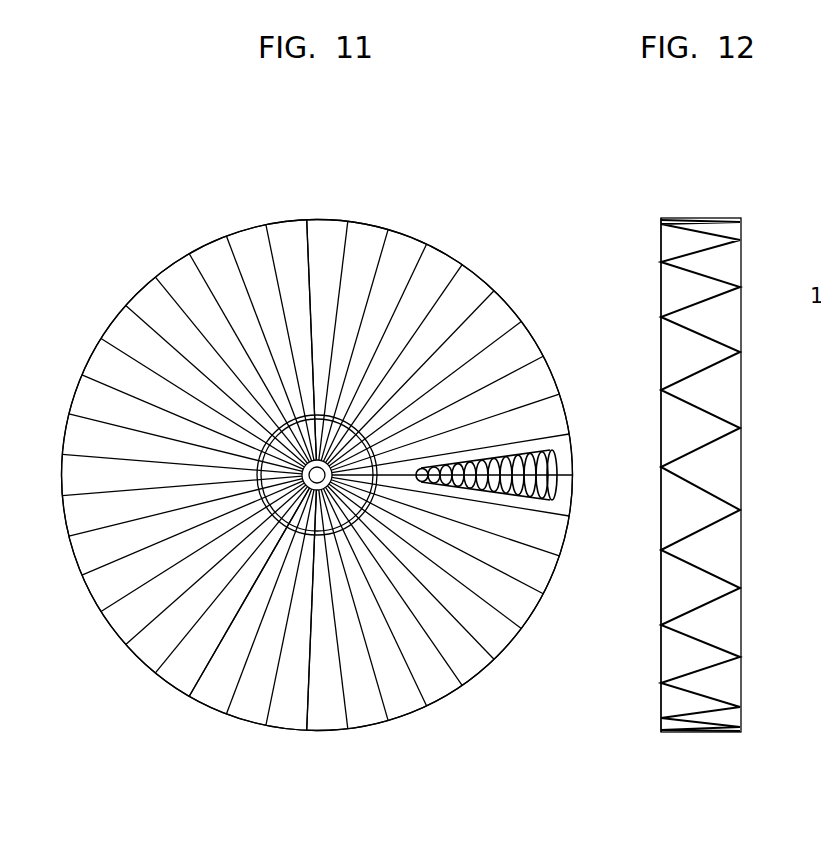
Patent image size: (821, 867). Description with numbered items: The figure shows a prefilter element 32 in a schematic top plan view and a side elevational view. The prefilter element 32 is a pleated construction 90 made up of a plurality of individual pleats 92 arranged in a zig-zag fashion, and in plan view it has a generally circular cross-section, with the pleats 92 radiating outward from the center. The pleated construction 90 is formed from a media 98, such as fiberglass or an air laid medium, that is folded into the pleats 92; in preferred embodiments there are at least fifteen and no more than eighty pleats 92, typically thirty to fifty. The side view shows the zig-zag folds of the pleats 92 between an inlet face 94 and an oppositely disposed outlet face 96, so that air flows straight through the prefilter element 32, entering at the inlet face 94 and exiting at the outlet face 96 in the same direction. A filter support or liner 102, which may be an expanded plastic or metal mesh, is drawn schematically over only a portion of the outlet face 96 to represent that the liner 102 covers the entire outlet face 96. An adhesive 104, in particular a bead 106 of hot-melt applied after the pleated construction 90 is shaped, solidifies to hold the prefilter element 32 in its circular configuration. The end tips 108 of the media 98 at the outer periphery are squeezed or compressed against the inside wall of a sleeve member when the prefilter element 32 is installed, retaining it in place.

In FIG. 11, the prefilter element 32 is at (400, 193).
In FIG. 12, the prefilter element 32 is at (709, 195).
In FIG. 11, the pleated construction 90 is at (445, 252).
In FIG. 11, the pleats 92 is at (500, 377).
In FIG. 12, the inlet face 94 is at (742, 645).
In FIG. 11, the outlet face 96 is at (207, 673).
In FIG. 12, the outlet face 96 is at (660, 666).
In FIG. 11, the media 98 is at (323, 230).
In FIG. 11, the filter support or liner 102 is at (551, 463).
In FIG. 11, the adhesive 104 is at (295, 418).
In FIG. 11, the bead 106 is at (272, 533).
In FIG. 11, the end tips 108 is at (322, 737).